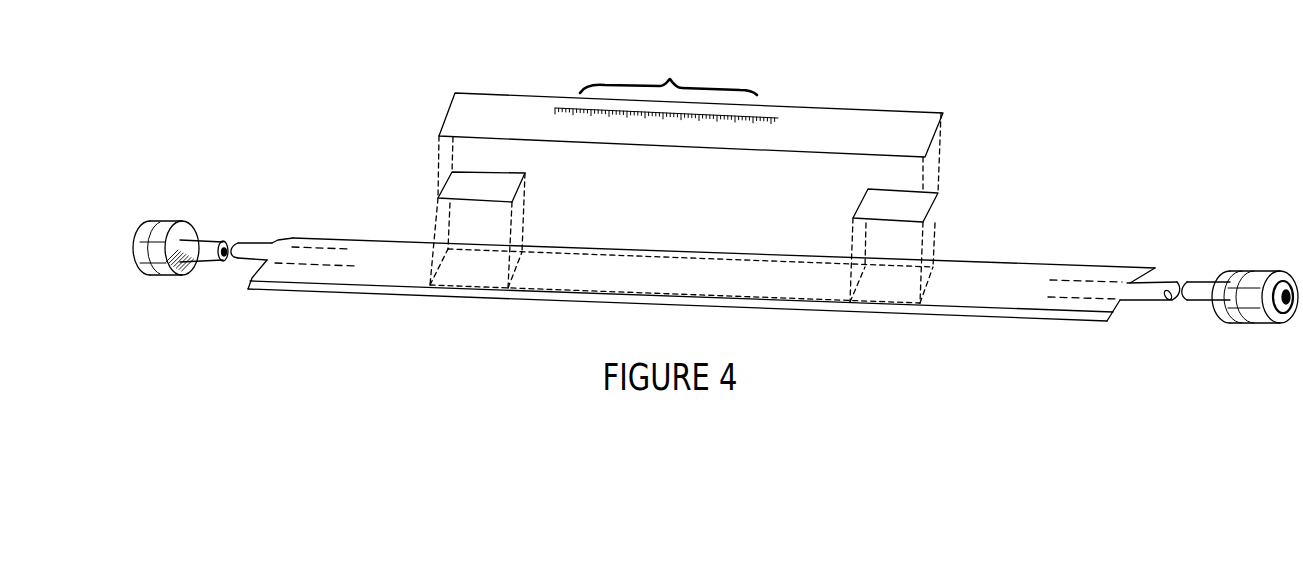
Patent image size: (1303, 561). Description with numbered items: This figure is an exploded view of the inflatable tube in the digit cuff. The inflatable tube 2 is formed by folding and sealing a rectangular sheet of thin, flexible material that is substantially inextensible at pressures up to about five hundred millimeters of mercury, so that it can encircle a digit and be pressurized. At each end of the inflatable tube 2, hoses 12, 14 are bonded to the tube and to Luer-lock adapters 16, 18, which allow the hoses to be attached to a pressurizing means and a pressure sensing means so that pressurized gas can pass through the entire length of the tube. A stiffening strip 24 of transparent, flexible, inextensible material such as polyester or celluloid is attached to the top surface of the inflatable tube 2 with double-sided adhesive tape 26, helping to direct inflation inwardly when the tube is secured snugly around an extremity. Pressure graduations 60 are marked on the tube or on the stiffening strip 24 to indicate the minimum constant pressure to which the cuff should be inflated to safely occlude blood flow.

The inflatable tube 2 is at (690, 252).
The hose 12 is at (268, 243).
The hose 14 is at (1163, 282).
The Luer-lock adapter 16 is at (180, 222).
The Luer-lock adapter 18 is at (1250, 271).
The stiffening strip 24 is at (472, 92).
The double-sided adhesive tape 26 is at (438, 190).
The pressure graduations 60 is at (670, 78).